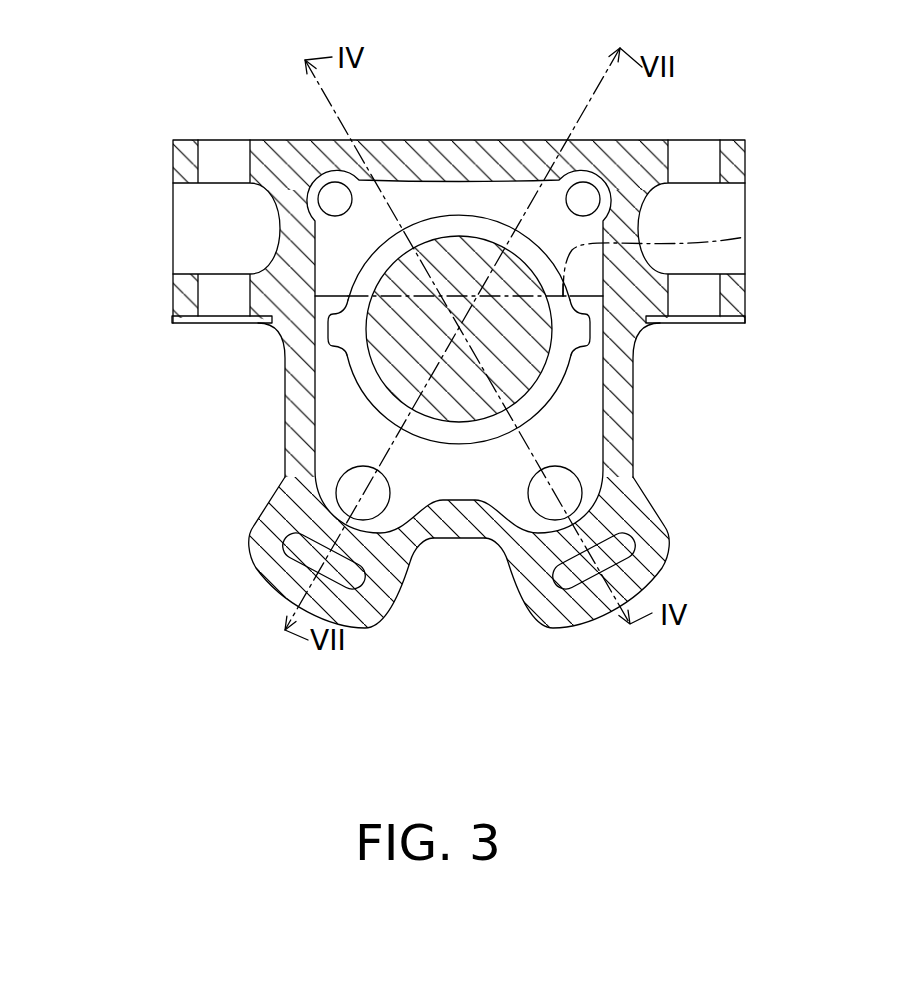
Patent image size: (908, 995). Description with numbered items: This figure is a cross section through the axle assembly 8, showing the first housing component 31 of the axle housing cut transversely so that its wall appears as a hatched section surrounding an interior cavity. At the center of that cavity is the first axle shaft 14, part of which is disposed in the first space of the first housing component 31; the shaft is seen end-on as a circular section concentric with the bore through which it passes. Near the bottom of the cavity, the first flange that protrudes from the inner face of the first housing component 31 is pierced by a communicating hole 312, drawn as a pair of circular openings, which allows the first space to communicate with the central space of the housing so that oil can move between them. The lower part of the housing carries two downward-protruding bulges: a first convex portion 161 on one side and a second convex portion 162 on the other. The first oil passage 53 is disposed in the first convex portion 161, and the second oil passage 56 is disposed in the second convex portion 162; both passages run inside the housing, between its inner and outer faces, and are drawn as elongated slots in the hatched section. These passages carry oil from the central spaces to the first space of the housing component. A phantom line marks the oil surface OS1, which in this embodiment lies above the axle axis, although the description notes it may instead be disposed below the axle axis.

The axle assembly 8 is at (787, 613).
The first housing component 31 is at (548, 140).
The communicating hole 312 is at (350, 480).
The first axle shaft 14 is at (443, 252).
The first convex portion 161 is at (597, 613).
The second convex portion 162 is at (267, 580).
The first oil passage 53 is at (620, 548).
The second oil passage 56 is at (300, 550).
The oil surface OS1 is at (745, 237).